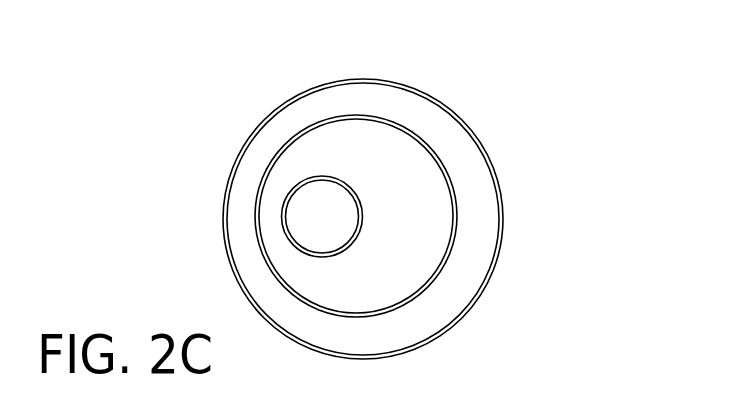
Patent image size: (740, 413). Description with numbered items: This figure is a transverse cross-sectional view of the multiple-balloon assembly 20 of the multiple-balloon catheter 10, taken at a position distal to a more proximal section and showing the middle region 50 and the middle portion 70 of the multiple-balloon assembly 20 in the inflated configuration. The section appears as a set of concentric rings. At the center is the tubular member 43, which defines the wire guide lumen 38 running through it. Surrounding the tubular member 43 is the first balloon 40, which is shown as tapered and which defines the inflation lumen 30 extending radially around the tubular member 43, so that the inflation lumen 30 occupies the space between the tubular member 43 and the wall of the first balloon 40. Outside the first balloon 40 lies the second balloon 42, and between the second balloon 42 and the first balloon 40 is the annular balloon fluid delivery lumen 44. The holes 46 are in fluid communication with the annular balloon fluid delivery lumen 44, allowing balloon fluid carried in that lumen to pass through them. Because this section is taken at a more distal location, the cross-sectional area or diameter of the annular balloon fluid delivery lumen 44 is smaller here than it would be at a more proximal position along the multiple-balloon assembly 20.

The multiple-balloon catheter 10 is at (504, 148).
The multiple-balloon assembly 20 is at (214, 202).
The inflation lumen 30 is at (400, 201).
The wire guide lumen 38 is at (333, 232).
The first balloon 40 is at (298, 134).
The second balloon 42 is at (437, 99).
The tubular member 43 is at (297, 247).
The annular balloon fluid delivery lumen 44 is at (492, 245).
The holes 46 is at (470, 308).
The middle region 50 is at (355, 317).
The middle portion 70 is at (361, 80).